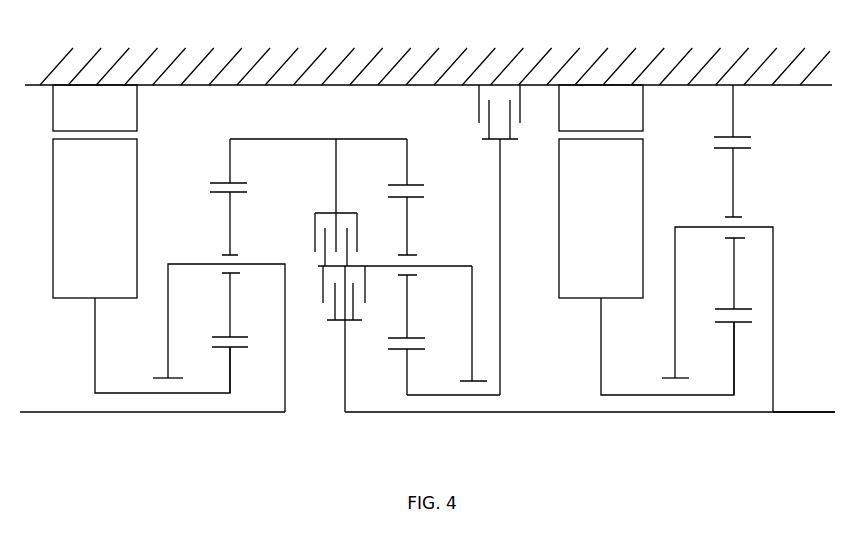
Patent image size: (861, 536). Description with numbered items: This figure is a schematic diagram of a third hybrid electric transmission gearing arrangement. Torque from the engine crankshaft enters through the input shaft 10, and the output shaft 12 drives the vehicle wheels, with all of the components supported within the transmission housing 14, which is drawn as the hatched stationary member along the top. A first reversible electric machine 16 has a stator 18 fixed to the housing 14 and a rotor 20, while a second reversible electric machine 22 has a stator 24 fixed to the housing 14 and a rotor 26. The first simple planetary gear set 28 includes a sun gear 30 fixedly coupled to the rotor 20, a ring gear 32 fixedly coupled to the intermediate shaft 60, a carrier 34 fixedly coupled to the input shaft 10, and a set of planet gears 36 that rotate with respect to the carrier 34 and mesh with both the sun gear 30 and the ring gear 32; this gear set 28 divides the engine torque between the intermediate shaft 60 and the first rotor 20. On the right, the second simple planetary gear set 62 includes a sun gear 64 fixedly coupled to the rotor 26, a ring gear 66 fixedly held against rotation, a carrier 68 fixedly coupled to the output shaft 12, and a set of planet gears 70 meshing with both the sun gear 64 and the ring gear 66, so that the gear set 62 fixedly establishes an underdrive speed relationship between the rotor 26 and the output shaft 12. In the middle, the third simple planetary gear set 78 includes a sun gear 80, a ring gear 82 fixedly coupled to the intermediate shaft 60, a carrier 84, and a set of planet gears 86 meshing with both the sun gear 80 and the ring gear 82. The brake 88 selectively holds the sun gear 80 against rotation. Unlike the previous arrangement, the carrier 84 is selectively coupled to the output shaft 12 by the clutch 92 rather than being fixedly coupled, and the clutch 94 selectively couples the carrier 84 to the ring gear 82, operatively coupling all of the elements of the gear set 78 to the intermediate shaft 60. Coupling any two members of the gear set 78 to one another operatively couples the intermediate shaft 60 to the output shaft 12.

The input shaft 10 is at (62, 412).
The output shaft 12 is at (810, 412).
The transmission housing 14 is at (316, 58).
The first reversible electric machine 16 is at (95, 78).
The stator 18 is at (53, 107).
The rotor 20 is at (137, 221).
The second reversible electric machine 22 is at (601, 78).
The stator 24 is at (559, 113).
The rotor 26 is at (643, 195).
The first simple planetary gear set 28 is at (226, 358).
The sun gear 30 is at (231, 375).
The ring gear 32 is at (228, 150).
The carrier 34 is at (168, 318).
The planet gears 36 is at (232, 237).
The intermediate shaft 60 is at (295, 139).
The second simple planetary gear set 62 is at (724, 339).
The sun gear 64 is at (733, 375).
The ring gear 66 is at (731, 103).
The carrier 68 is at (675, 325).
The planet gears 70 is at (735, 195).
The third simple planetary gear set 78 is at (576, 298).
The sun gear 80 is at (408, 377).
The ring gear 82 is at (405, 157).
The carrier 84 is at (473, 288).
The planet gears 86 is at (408, 235).
The brake 88 is at (477, 113).
The clutch 92 is at (323, 282).
The clutch 94 is at (313, 228).